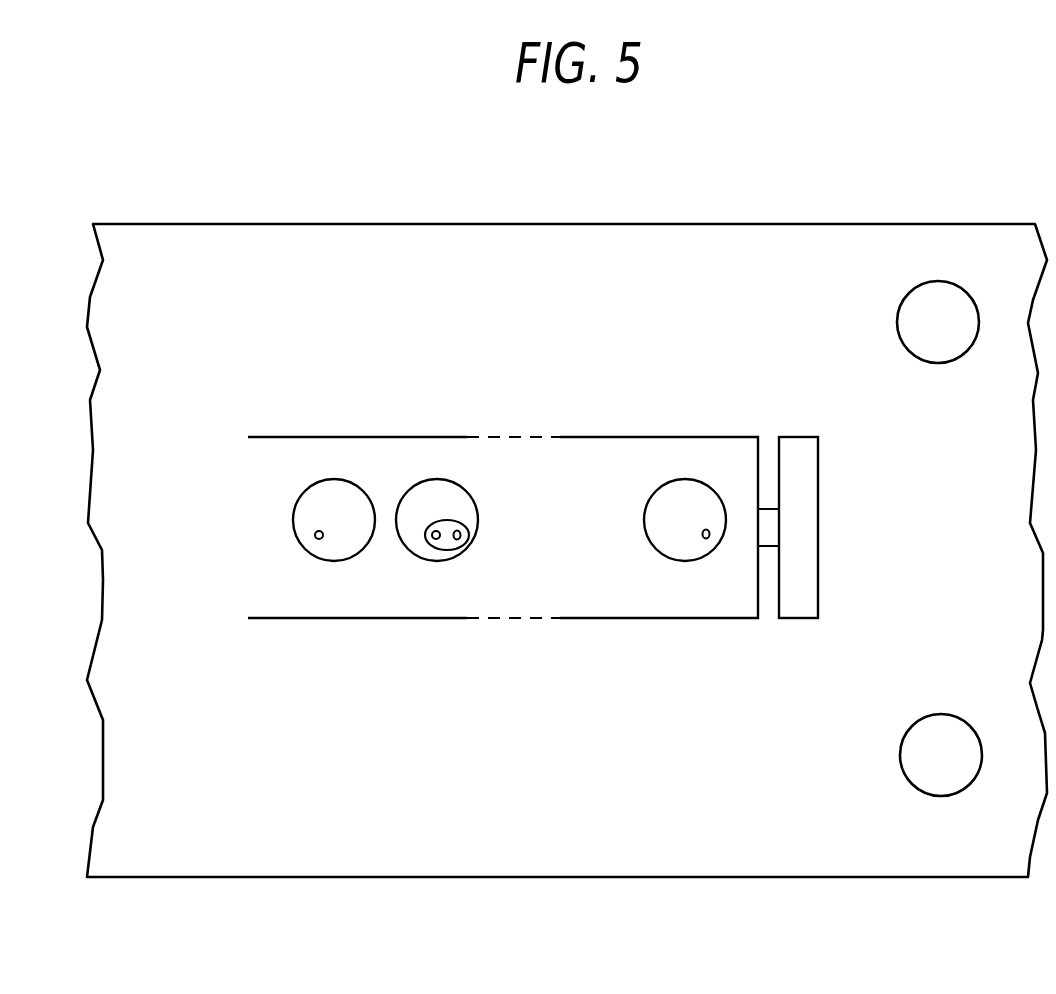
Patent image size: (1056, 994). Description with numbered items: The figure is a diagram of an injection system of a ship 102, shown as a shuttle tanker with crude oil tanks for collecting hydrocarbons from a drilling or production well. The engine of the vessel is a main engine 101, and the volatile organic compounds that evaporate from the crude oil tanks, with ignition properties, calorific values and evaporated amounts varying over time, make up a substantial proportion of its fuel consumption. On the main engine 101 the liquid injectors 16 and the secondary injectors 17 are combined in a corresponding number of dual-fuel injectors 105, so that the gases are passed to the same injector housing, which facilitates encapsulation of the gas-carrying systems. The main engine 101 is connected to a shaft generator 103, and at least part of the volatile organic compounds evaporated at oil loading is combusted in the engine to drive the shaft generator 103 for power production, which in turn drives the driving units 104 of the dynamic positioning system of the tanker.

The liquid injector 16 is at (319, 540).
The secondary injector 17 is at (457, 540).
The main engine 101 is at (340, 455).
The ship 102 is at (461, 224).
The shaft generator 103 is at (797, 458).
The driving unit 104 is at (897, 323).
The dual-fuel injector 105 is at (468, 531).